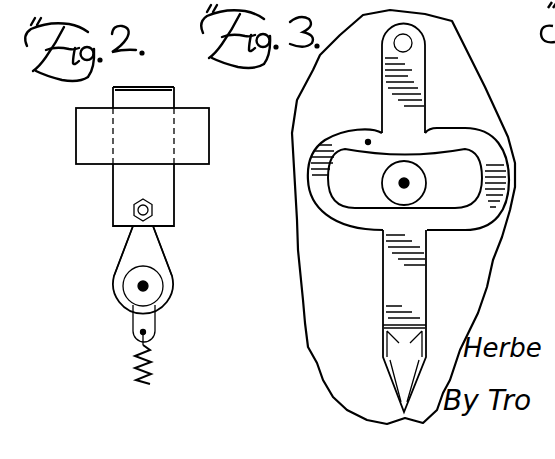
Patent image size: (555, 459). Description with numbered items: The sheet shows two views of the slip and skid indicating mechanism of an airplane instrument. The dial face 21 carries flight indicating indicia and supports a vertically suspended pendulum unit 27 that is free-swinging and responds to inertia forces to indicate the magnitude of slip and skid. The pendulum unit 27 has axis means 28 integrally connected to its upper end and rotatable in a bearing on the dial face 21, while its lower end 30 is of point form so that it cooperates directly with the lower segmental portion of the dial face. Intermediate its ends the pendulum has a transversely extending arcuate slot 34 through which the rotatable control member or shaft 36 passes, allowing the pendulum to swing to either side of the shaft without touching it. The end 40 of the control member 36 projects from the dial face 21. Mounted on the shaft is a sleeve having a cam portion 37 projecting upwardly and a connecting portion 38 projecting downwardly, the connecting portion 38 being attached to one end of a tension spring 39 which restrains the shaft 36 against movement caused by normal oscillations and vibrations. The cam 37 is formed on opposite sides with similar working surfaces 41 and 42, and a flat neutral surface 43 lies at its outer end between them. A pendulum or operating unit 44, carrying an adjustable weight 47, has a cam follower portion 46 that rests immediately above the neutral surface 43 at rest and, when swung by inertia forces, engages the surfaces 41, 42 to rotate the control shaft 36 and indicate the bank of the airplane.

In FIG. 3, the dial face 21 is at (475, 277).
In FIG. 3, the pendulum unit 27 is at (420, 97).
In FIG. 3, the axis means 28 is at (407, 43).
In FIG. 3, the lower end 30 is at (388, 343).
In FIG. 3, the arcuate slot 34 is at (475, 165).
In FIG. 2, the control member or shaft 36 is at (148, 287).
In FIG. 3, the control member or shaft 36 is at (404, 183).
In FIG. 2, the cam portion 37 is at (152, 242).
In FIG. 2, the connecting portion 38 is at (148, 326).
In FIG. 2, the tension spring 39 is at (135, 370).
In FIG. 3, the end of control member 40 is at (395, 177).
In FIG. 2, the cam surface 41 is at (123, 253).
In FIG. 2, the cam surface 42 is at (168, 257).
In FIG. 2, the neutral surface 43 is at (133, 210).
In FIG. 2, the pendulum or operating unit 44 is at (108, 96).
In FIG. 2, the cam follower portion 46 is at (155, 206).
In FIG. 2, the adjustable weight 47 is at (192, 128).